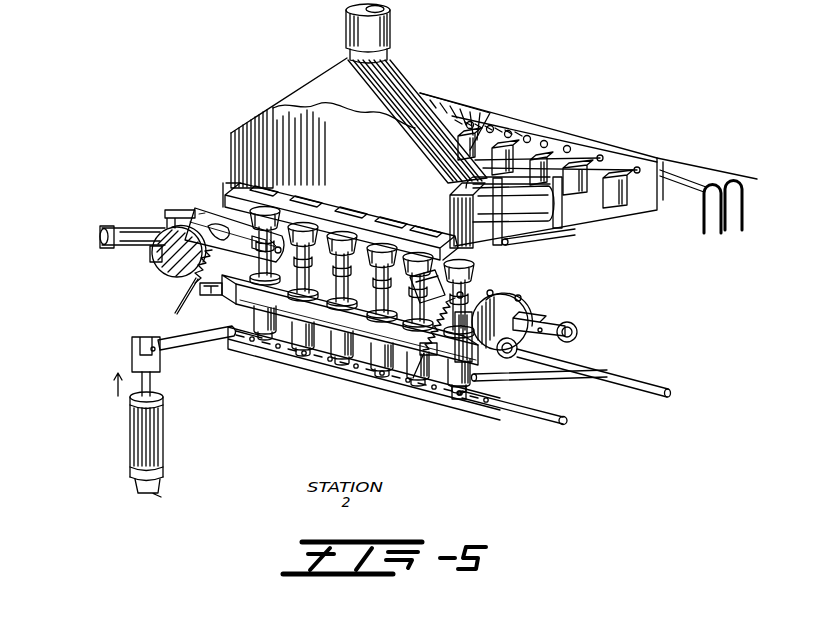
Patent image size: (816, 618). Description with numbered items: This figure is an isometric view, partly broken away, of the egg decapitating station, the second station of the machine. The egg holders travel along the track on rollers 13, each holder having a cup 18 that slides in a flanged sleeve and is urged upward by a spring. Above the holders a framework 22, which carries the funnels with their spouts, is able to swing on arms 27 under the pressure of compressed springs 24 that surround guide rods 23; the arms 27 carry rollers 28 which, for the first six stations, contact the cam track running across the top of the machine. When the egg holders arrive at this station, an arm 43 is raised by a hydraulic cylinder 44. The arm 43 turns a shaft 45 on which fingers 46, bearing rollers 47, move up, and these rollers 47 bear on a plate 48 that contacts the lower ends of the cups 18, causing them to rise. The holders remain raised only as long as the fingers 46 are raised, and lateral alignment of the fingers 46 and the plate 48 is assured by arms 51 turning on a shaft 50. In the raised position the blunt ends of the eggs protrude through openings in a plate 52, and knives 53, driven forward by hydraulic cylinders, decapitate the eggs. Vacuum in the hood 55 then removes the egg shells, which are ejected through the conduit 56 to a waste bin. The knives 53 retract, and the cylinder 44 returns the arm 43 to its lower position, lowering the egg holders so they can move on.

The rollers 13 is at (577, 328).
The cup 18 is at (368, 360).
The framework 22 is at (203, 206).
The guide rods 23 is at (177, 307).
The compressed springs 24 is at (219, 284).
The arms 27 is at (468, 295).
The rollers 28 is at (172, 212).
The arm 43 is at (178, 344).
The hydraulic cylinder 44 is at (128, 440).
The shaft 45 is at (551, 424).
The fingers 46 is at (500, 407).
The rollers 47 is at (457, 397).
The plate 48 is at (322, 346).
The shaft 50 is at (647, 380).
The arms 51 is at (568, 378).
The plate 52 is at (523, 256).
The knives 53 is at (510, 248).
The hood 55 is at (323, 72).
The conduit 56 is at (392, 21).